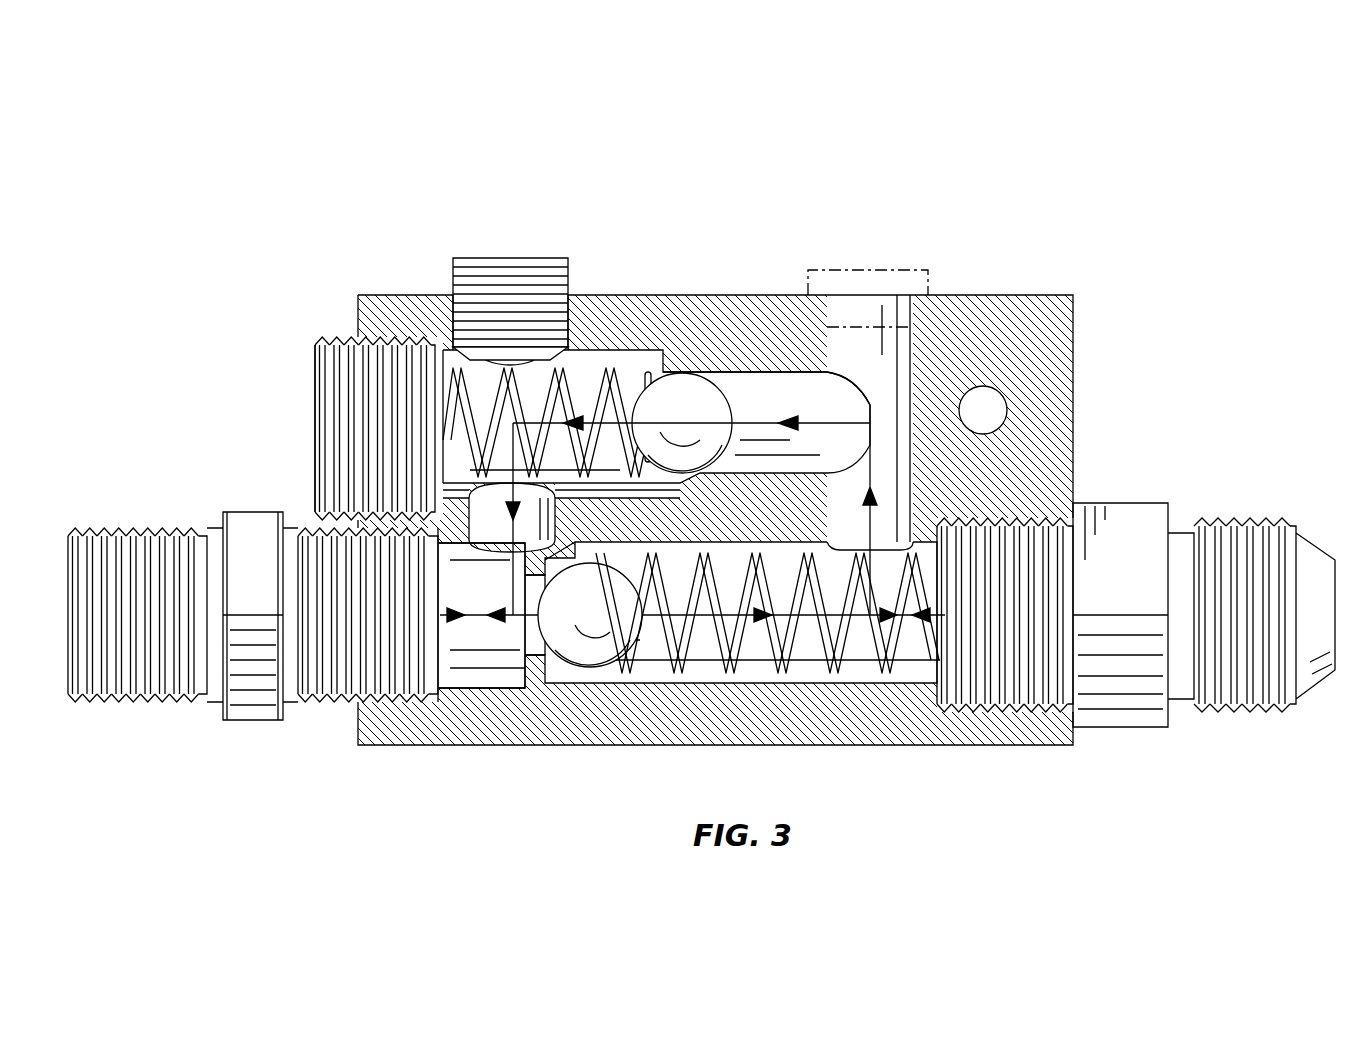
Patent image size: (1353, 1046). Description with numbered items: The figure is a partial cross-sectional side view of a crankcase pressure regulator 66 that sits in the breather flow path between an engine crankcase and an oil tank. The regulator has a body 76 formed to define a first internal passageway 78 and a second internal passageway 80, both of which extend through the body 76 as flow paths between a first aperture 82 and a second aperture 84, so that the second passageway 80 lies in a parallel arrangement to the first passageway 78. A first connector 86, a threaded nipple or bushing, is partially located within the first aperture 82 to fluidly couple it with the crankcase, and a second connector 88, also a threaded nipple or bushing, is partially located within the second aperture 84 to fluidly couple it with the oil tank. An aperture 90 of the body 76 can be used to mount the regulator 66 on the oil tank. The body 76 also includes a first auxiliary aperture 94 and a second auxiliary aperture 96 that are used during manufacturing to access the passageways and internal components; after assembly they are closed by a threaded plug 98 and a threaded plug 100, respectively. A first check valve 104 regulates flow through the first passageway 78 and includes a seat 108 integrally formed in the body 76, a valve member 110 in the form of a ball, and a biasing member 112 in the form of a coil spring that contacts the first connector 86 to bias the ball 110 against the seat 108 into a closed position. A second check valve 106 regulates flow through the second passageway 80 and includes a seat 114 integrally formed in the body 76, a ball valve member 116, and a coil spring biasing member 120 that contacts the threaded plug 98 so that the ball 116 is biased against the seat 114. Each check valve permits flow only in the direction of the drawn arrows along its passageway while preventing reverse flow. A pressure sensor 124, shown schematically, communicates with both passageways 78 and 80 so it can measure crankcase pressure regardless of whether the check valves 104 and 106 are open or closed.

The crankcase pressure regulator 66 is at (1057, 139).
The body 76 is at (1073, 412).
The first internal passageway 78 is at (742, 602).
The second internal passageway 80 is at (862, 518).
The first aperture 82 is at (1030, 548).
The second aperture 84 is at (373, 680).
The first connector 86 is at (1235, 522).
The second connector 88 is at (157, 527).
The aperture 90 is at (1000, 405).
The first auxiliary aperture 94 is at (372, 350).
The second auxiliary aperture 96 is at (552, 302).
The threaded plug 98 is at (320, 440).
The threaded plug 100 is at (521, 258).
The first check valve 104 is at (507, 675).
The second check valve 106 is at (750, 389).
The seat 108 is at (532, 672).
The valve member 110 is at (580, 655).
The biasing member 112 is at (777, 672).
The seat 114 is at (676, 358).
The valve member 116 is at (692, 390).
The biasing member 120 is at (565, 410).
The pressure sensor 124 is at (890, 270).